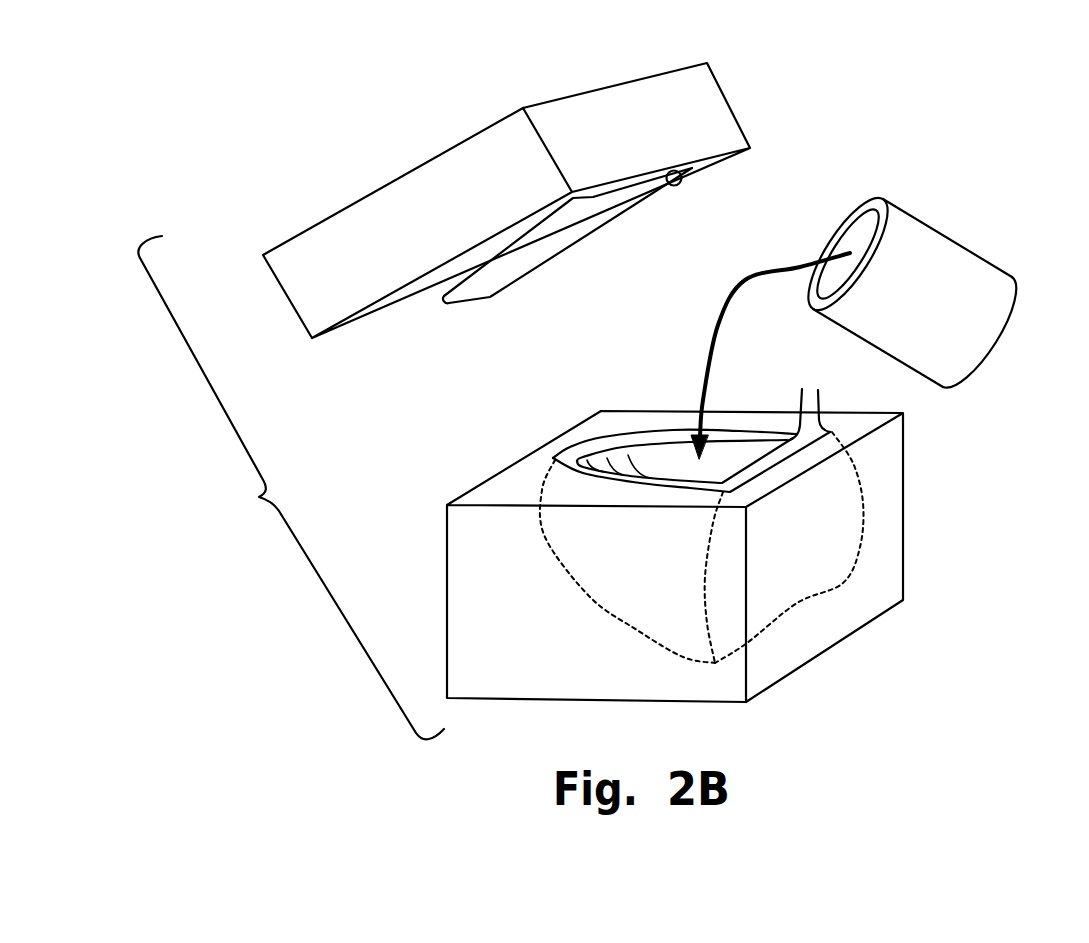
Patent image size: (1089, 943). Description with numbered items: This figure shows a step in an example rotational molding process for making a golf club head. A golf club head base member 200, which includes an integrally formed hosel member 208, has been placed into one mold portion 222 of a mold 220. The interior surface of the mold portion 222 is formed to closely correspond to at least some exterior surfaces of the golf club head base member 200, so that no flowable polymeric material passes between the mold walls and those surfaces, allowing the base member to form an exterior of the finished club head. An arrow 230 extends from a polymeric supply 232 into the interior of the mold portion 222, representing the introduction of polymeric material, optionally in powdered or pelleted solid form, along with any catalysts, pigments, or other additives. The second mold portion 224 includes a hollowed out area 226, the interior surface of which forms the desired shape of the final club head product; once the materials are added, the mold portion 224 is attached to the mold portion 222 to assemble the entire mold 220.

The golf club head base member 200 is at (572, 458).
The hosel member 208 is at (810, 403).
The mold 220 is at (291, 487).
The mold portion 222 is at (487, 553).
The mold portion 224 is at (327, 253).
The hollowed out area 226 is at (565, 230).
The arrow 230 is at (733, 317).
The polymeric supply 232 is at (935, 228).